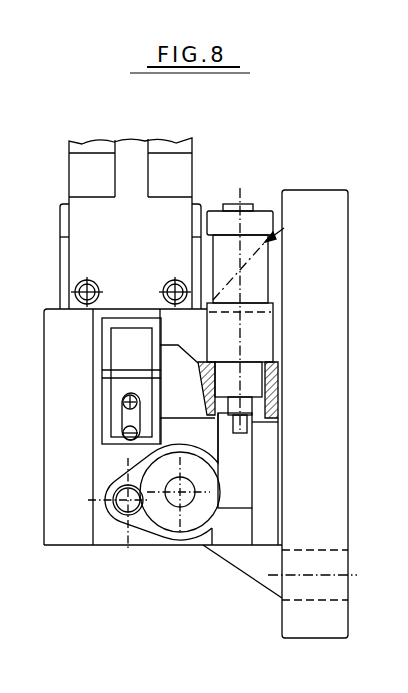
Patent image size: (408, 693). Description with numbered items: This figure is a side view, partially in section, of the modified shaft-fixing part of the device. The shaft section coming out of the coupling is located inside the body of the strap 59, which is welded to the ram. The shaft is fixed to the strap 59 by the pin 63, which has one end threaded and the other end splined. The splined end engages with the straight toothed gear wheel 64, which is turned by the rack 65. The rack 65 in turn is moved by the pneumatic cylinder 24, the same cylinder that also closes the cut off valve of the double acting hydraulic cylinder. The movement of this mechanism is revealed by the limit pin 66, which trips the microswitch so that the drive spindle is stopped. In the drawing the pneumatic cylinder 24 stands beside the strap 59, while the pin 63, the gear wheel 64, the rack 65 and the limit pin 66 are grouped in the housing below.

The pneumatic cylinder 24 is at (218, 227).
The strap 59 is at (308, 210).
The pin 63 is at (132, 512).
The straight toothed gear wheel 64 is at (175, 518).
The rack 65 is at (223, 477).
The limit pin 66 is at (121, 402).